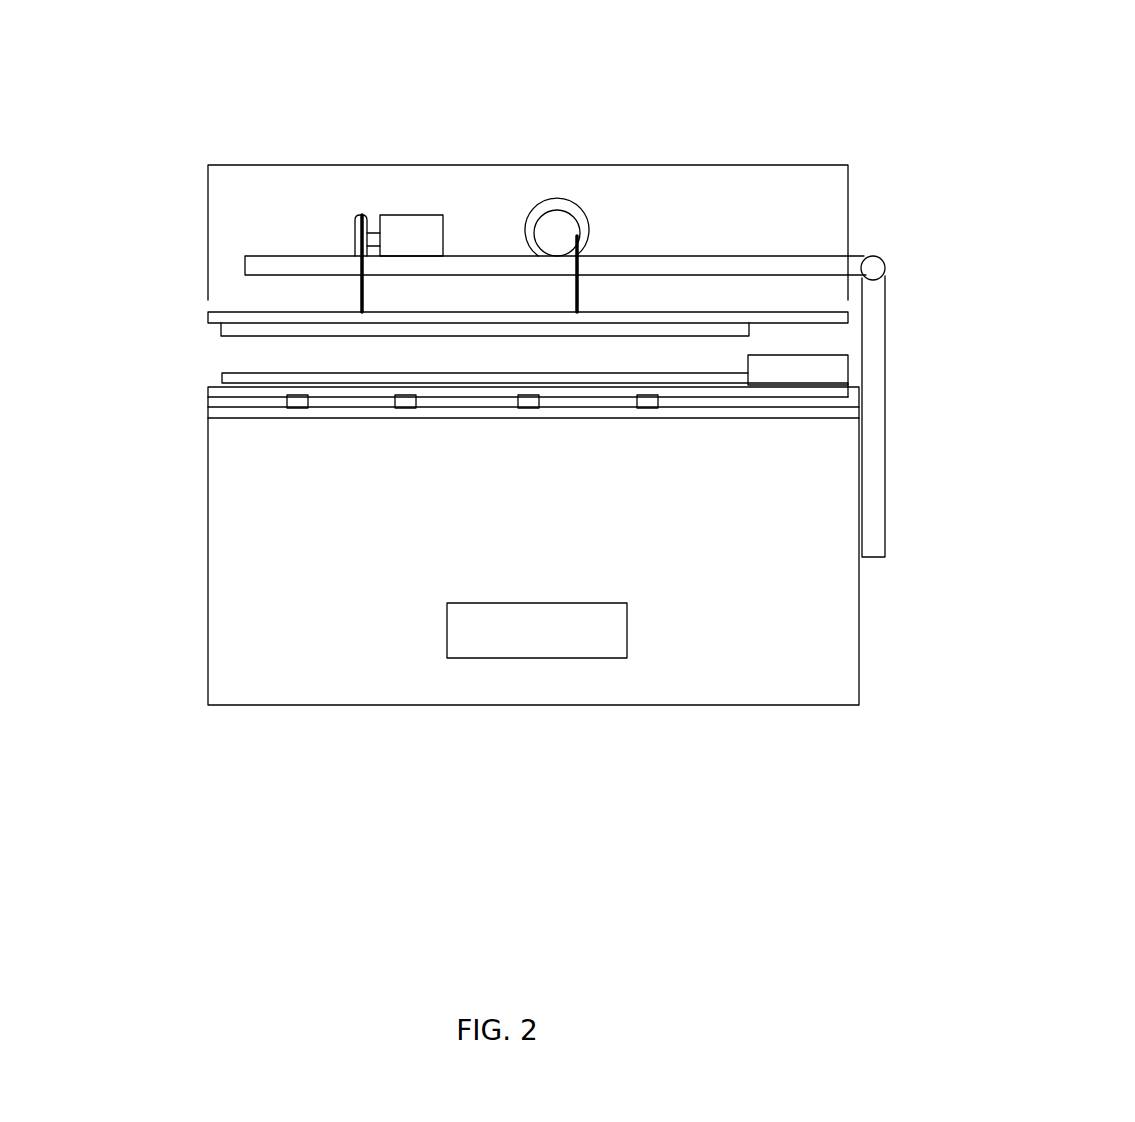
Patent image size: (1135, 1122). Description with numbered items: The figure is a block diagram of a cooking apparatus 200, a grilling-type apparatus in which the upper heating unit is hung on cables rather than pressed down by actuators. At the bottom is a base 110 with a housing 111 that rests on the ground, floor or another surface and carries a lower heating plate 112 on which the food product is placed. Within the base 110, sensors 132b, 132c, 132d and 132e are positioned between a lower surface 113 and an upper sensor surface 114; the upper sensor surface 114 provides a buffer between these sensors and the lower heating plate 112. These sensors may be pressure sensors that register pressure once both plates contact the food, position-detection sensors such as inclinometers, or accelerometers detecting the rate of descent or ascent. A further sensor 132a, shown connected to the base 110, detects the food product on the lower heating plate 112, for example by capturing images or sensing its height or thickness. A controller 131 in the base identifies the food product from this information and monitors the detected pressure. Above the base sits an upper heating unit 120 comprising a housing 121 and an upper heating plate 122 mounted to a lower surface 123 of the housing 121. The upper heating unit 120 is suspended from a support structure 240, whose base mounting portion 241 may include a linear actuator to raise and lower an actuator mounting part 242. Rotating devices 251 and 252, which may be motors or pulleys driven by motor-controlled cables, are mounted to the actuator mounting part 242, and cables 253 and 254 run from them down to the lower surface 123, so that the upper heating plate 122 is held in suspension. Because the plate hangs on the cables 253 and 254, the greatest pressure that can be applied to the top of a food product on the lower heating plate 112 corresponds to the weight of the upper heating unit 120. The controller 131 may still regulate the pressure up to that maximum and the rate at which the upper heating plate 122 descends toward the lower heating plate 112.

The cooking apparatus 200 is at (722, 90).
The base 110 is at (148, 548).
The housing 111 is at (208, 657).
The lower heating plate 112 is at (222, 373).
The lower surface 113 is at (208, 410).
The upper sensor surface 114 is at (208, 392).
The upper heating unit 120 is at (167, 250).
The housing 121 is at (208, 200).
The upper heating plate 122 is at (358, 333).
The lower surface 123 is at (208, 314).
The controller 131 is at (505, 603).
The sensor 132a is at (848, 385).
The sensor 132b is at (298, 408).
The sensor 132c is at (401, 408).
The sensor 132d is at (528, 408).
The sensor 132e is at (645, 408).
The support structure 240 is at (873, 243).
The base mounting portion 241 is at (878, 300).
The actuator mounting part 242 is at (297, 255).
The rotating device 251 is at (411, 200).
The rotating device 252 is at (552, 200).
The cable 253 is at (362, 292).
The cable 254 is at (578, 295).